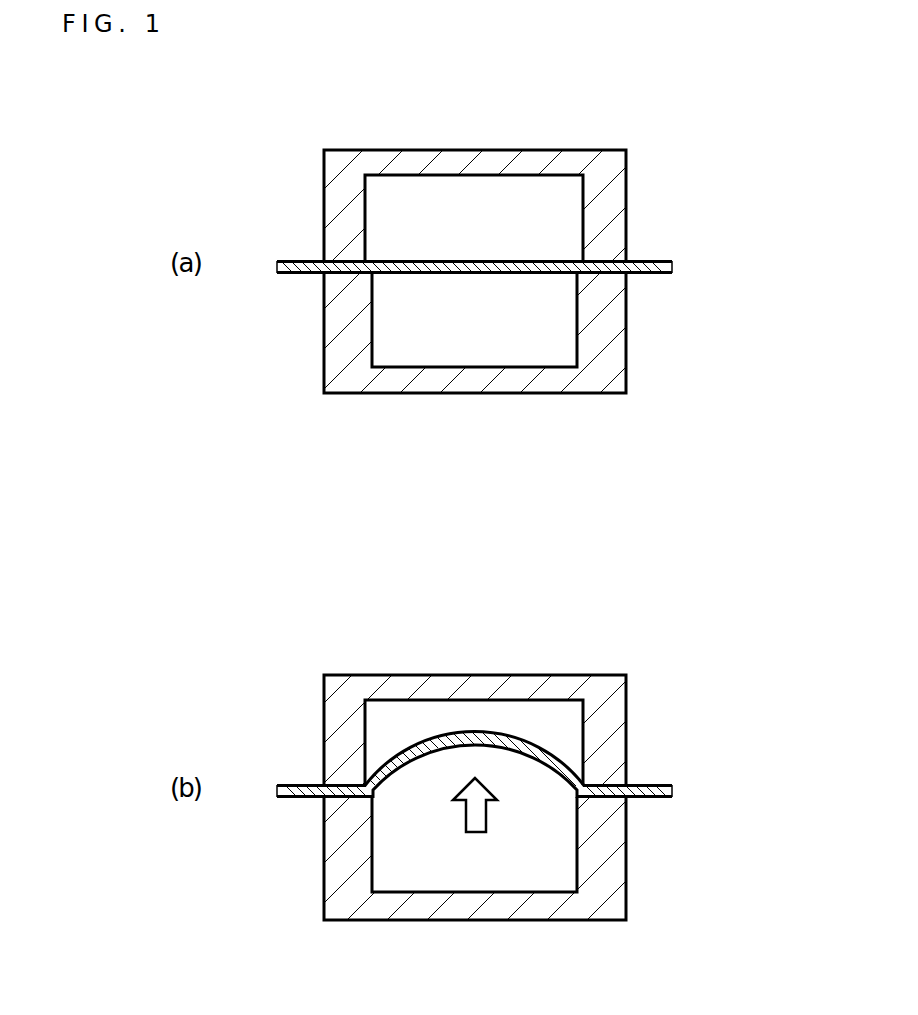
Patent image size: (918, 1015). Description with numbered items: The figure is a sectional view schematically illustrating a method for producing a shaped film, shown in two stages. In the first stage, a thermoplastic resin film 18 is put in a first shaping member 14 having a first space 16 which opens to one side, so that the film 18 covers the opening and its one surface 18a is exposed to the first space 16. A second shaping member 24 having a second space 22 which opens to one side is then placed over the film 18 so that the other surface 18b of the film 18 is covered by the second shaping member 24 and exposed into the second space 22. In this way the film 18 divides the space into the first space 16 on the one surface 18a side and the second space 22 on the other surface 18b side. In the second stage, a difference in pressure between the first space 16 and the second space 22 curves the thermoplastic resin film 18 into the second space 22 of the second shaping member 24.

The first shaping member 14 is at (613, 327).
The first space 16 is at (540, 327).
The thermoplastic resin film 18 is at (672, 264).
The one surface 18a is at (443, 273).
The other surface 18b is at (440, 261).
The second space 22 is at (535, 207).
The second shaping member 24 is at (613, 203).